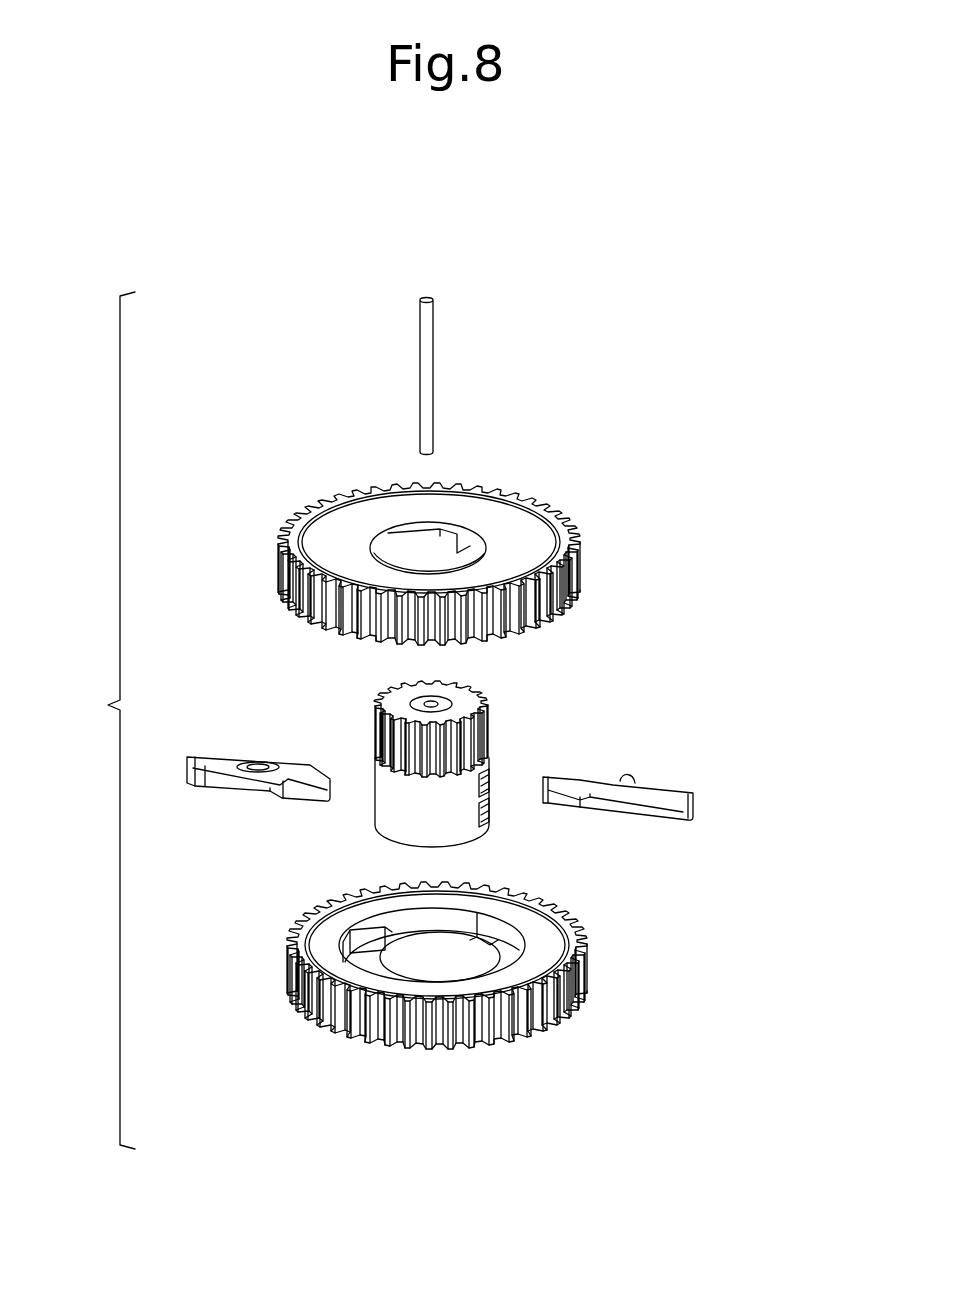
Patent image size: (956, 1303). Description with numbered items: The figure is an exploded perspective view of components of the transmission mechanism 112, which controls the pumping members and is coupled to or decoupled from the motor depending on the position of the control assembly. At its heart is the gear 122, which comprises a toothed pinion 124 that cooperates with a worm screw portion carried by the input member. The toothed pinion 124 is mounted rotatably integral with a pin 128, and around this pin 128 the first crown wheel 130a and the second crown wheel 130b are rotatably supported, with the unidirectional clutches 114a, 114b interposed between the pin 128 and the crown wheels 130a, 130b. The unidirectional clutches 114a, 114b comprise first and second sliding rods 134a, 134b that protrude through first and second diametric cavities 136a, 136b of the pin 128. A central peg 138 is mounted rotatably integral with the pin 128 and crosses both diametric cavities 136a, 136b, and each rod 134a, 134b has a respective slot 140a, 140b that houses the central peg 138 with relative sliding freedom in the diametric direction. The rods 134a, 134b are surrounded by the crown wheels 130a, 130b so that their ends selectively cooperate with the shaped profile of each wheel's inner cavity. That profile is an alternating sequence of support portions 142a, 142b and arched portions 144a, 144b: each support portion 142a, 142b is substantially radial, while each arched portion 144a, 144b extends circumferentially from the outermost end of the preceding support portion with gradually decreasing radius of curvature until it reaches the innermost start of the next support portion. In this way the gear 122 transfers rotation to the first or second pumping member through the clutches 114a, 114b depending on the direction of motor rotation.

The transmission mechanism 112 is at (572, 330).
The first unidirectional clutch 114a is at (252, 725).
The second unidirectional clutch 114b is at (674, 805).
The gear 122 is at (91, 720).
The toothed pinion 124 is at (492, 718).
The pin 128 is at (373, 830).
The first crown wheel 130a is at (320, 1044).
The second crown wheel 130b is at (578, 530).
The first sliding rod 134a is at (230, 767).
The second sliding rod 134b is at (684, 803).
The first diametric cavity 136a is at (489, 812).
The second diametric cavity 136b is at (489, 786).
The central peg 138 is at (426, 294).
The slot 140a is at (293, 734).
The slot 140b is at (633, 785).
The support portion 142a is at (372, 945).
The support portion 142b is at (468, 542).
The arched portion 144a is at (430, 920).
The arched portion 144b is at (443, 534).